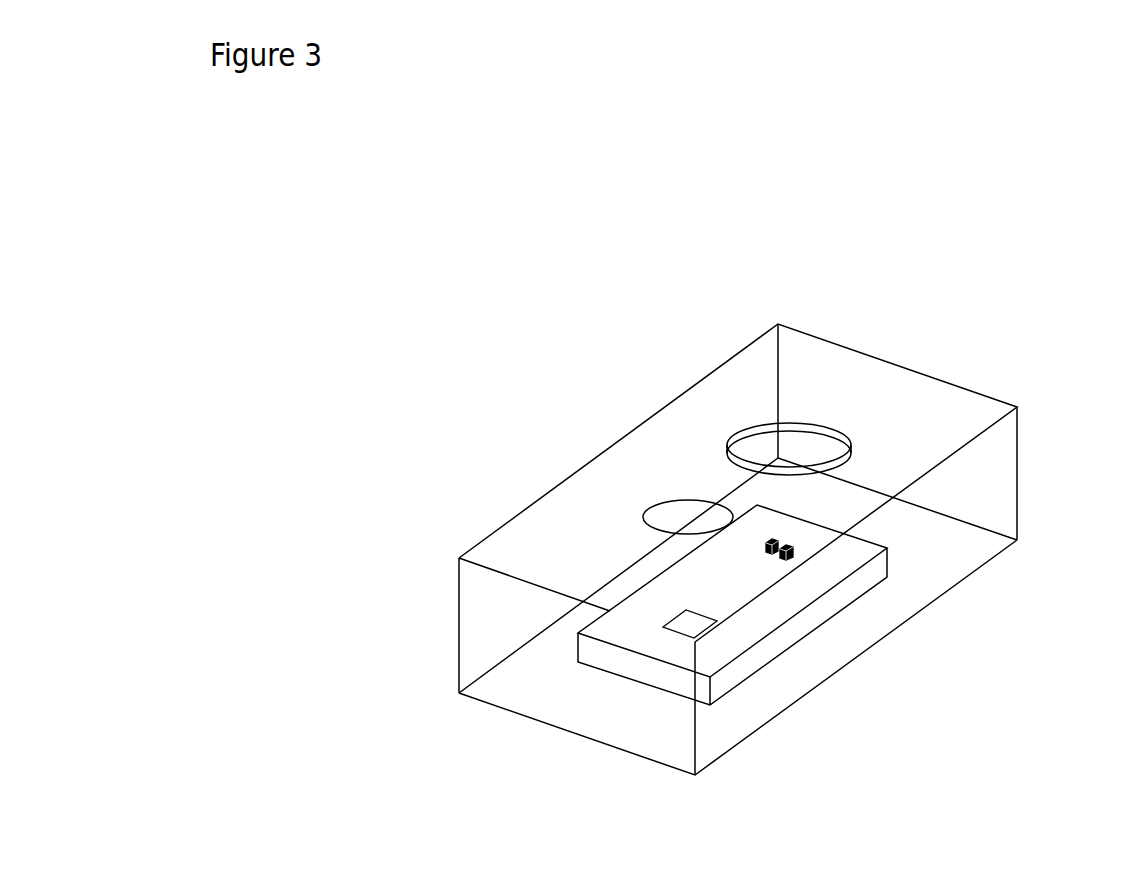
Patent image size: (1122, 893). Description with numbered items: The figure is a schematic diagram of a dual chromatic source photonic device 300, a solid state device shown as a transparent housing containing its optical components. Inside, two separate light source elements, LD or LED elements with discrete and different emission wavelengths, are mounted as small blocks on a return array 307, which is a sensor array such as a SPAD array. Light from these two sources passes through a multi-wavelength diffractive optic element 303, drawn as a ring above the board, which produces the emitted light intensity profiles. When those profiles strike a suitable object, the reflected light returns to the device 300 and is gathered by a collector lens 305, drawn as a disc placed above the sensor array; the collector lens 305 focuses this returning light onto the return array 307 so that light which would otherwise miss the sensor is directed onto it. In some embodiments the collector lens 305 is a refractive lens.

The dual chromatic source photonic device 300 is at (328, 300).
The multi-wavelength diffractive optic element 303 is at (801, 448).
The collector lens 305 is at (675, 513).
The return array 307 is at (712, 625).